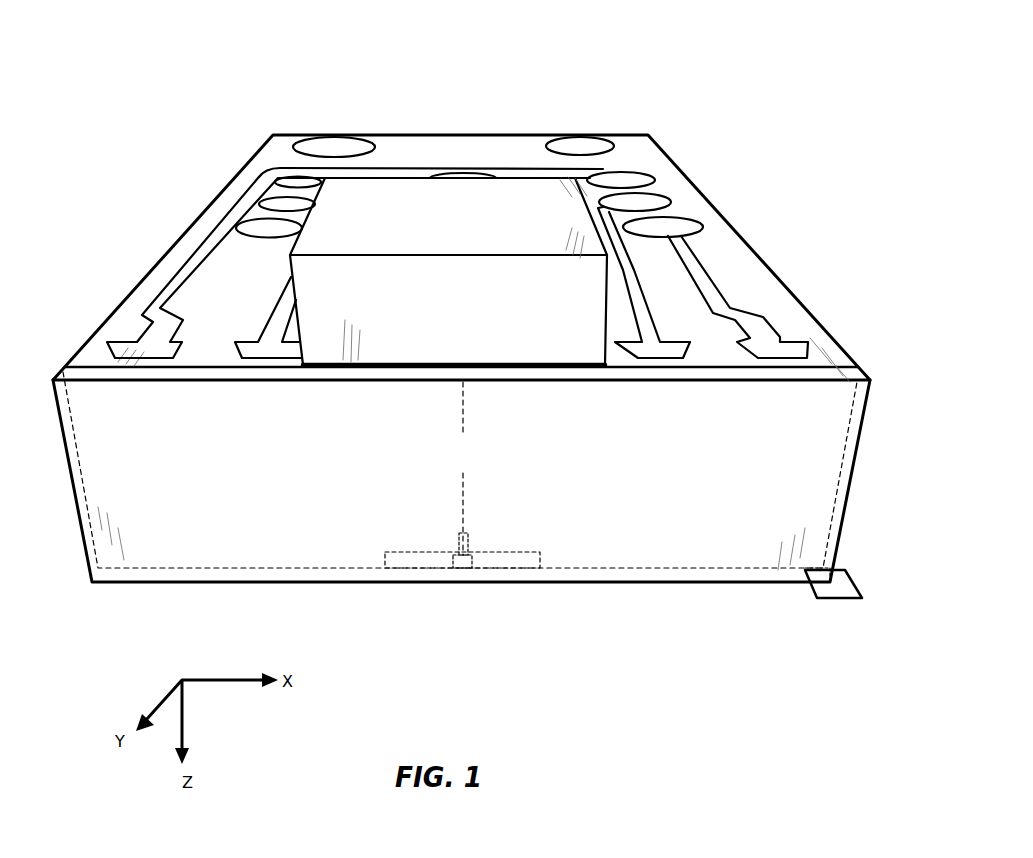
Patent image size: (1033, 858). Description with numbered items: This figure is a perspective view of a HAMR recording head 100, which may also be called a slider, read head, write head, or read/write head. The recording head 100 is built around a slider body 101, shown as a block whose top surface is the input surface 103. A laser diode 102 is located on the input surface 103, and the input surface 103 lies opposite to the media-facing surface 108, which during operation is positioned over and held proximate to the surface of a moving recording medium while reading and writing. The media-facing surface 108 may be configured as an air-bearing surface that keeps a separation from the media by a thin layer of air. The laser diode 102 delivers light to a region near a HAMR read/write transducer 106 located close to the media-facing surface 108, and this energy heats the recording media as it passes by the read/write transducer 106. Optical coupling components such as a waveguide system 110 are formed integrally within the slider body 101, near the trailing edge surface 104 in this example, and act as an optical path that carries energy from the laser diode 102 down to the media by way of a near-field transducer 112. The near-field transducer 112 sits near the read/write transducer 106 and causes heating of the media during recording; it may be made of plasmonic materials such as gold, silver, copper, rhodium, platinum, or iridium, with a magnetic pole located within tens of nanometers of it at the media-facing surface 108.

The HAMR recording head 100 is at (450, 357).
The slider body 101 is at (248, 162).
The laser diode 102 is at (412, 188).
The input surface 103 is at (122, 323).
The trailing edge surface 104 is at (155, 557).
The HAMR read/write transducer 106 is at (467, 568).
The media-facing surface 108 is at (850, 600).
The waveguide system 110 is at (465, 457).
The near-field transducer 112 is at (460, 568).